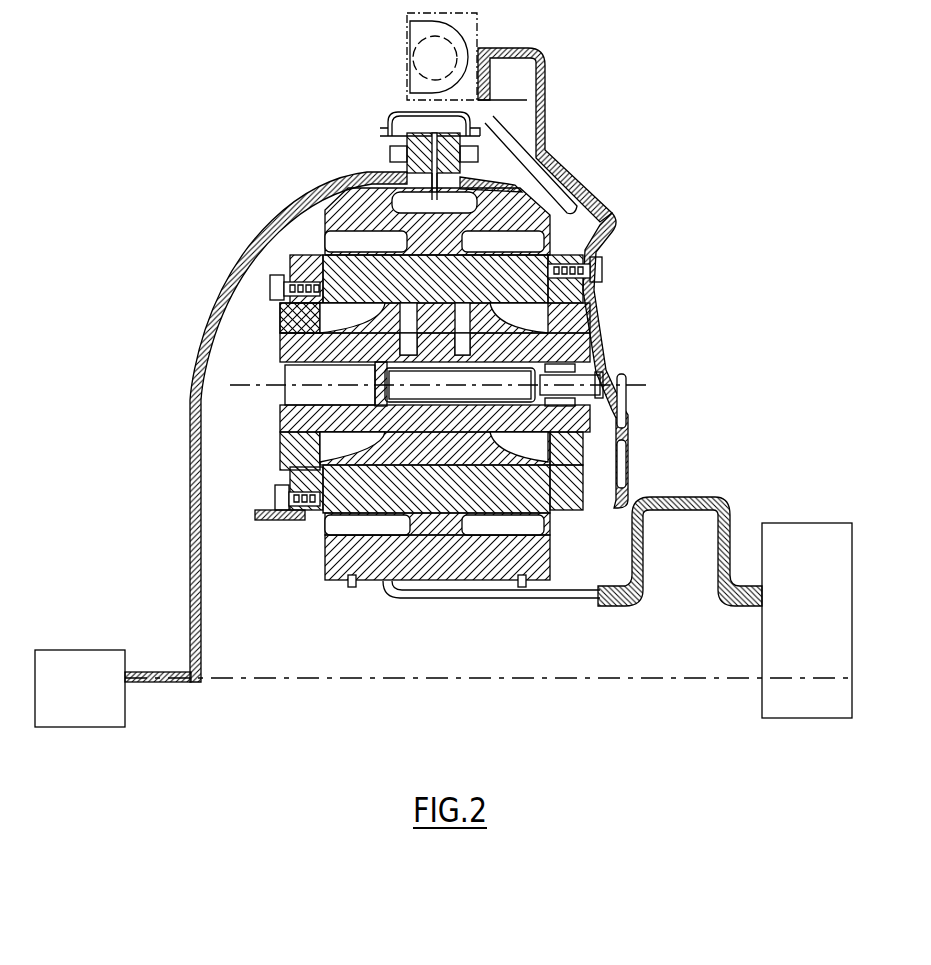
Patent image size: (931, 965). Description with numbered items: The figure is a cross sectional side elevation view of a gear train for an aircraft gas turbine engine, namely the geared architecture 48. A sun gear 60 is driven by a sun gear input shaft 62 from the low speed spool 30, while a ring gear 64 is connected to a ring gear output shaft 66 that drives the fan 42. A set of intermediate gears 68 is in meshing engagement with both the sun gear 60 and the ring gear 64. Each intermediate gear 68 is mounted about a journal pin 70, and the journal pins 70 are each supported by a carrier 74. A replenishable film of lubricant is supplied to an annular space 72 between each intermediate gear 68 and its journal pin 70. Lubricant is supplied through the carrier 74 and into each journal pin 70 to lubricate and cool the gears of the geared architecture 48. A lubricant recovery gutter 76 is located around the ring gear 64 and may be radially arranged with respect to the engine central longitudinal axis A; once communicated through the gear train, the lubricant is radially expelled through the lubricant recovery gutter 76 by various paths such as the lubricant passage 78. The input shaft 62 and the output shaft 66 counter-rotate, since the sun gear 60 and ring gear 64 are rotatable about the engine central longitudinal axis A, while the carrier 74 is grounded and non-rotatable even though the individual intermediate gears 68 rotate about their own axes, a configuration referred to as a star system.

The low speed spool 30 is at (821, 587).
The fan 42 is at (93, 700).
The geared architecture 48 is at (672, 207).
The sun gear 60 is at (345, 563).
The sun gear input shaft 62 is at (592, 606).
The ring gear 64 is at (523, 220).
The ring gear output shaft 66 is at (290, 216).
The intermediate gears 68 is at (330, 530).
The journal pin 70 is at (288, 410).
The annular space 72 is at (300, 468).
The carrier 74 is at (578, 290).
The lubricant recovery gutter 76 is at (410, 110).
The lubricant passage 78 is at (450, 183).
The engine central longitudinal axis A is at (278, 680).